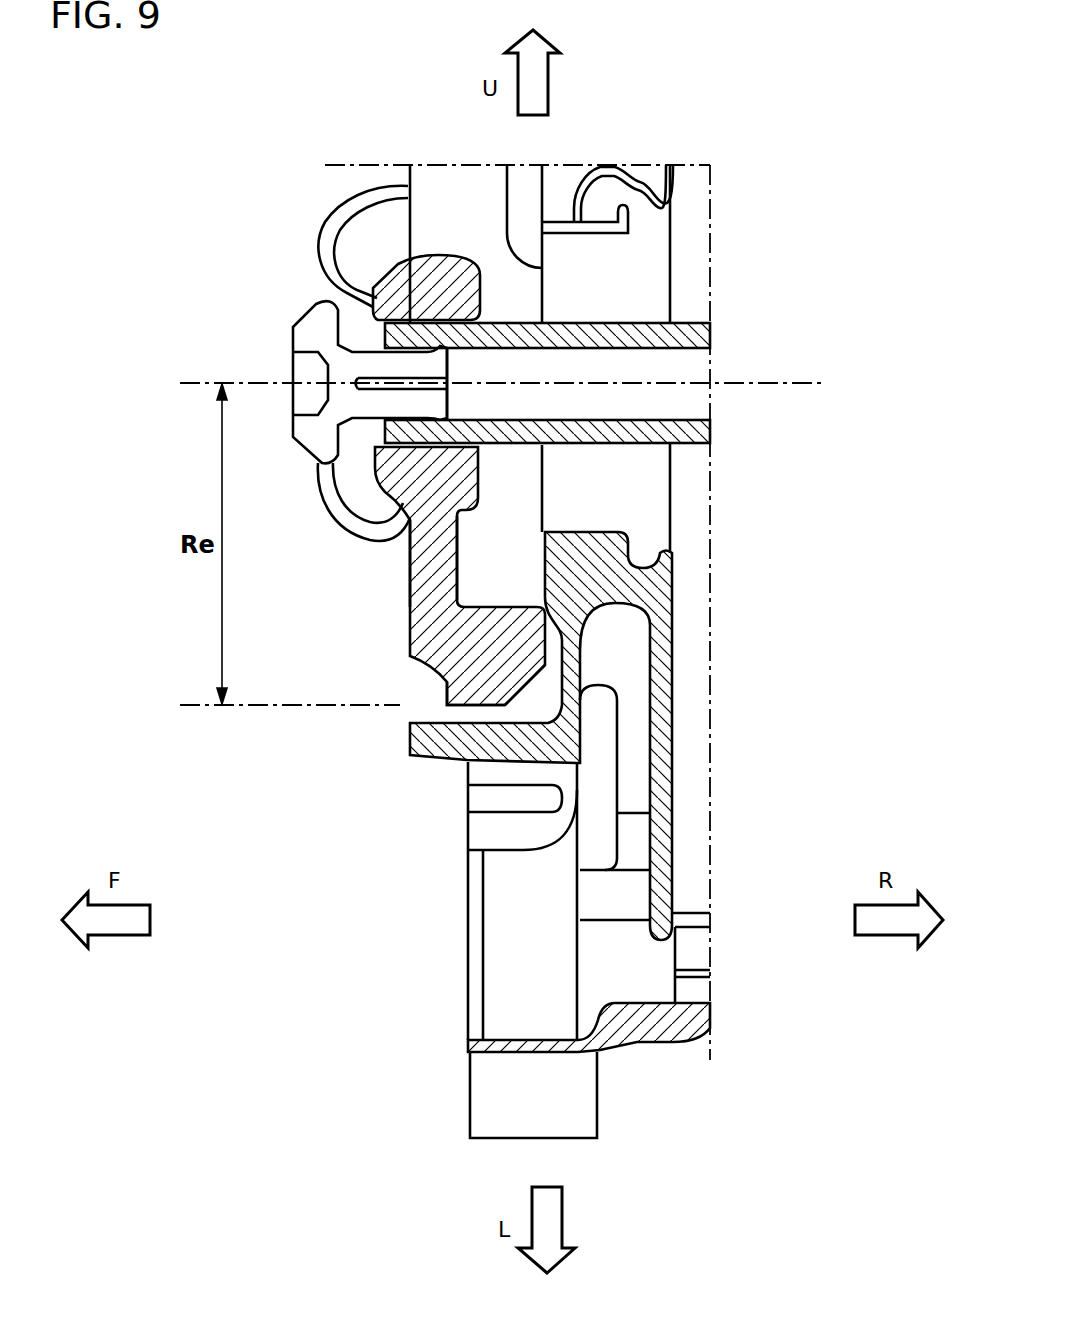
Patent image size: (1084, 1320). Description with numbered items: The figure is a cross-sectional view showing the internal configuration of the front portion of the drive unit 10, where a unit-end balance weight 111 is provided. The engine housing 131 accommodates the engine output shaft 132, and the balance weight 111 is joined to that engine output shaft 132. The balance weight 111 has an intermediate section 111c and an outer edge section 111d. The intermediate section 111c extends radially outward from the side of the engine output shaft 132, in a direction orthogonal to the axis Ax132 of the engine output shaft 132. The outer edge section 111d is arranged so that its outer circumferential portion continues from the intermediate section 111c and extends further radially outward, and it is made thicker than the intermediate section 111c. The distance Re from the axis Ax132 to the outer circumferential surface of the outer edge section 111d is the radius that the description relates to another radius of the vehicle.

The drive unit 10 is at (270, 225).
The balance weight 111 is at (437, 632).
The intermediate section 111c is at (428, 584).
The outer edge section 111d is at (470, 690).
The engine housing 131 is at (633, 1030).
The engine output shaft 132 is at (692, 433).
The axis of the engine output shaft Ax132 is at (771, 377).